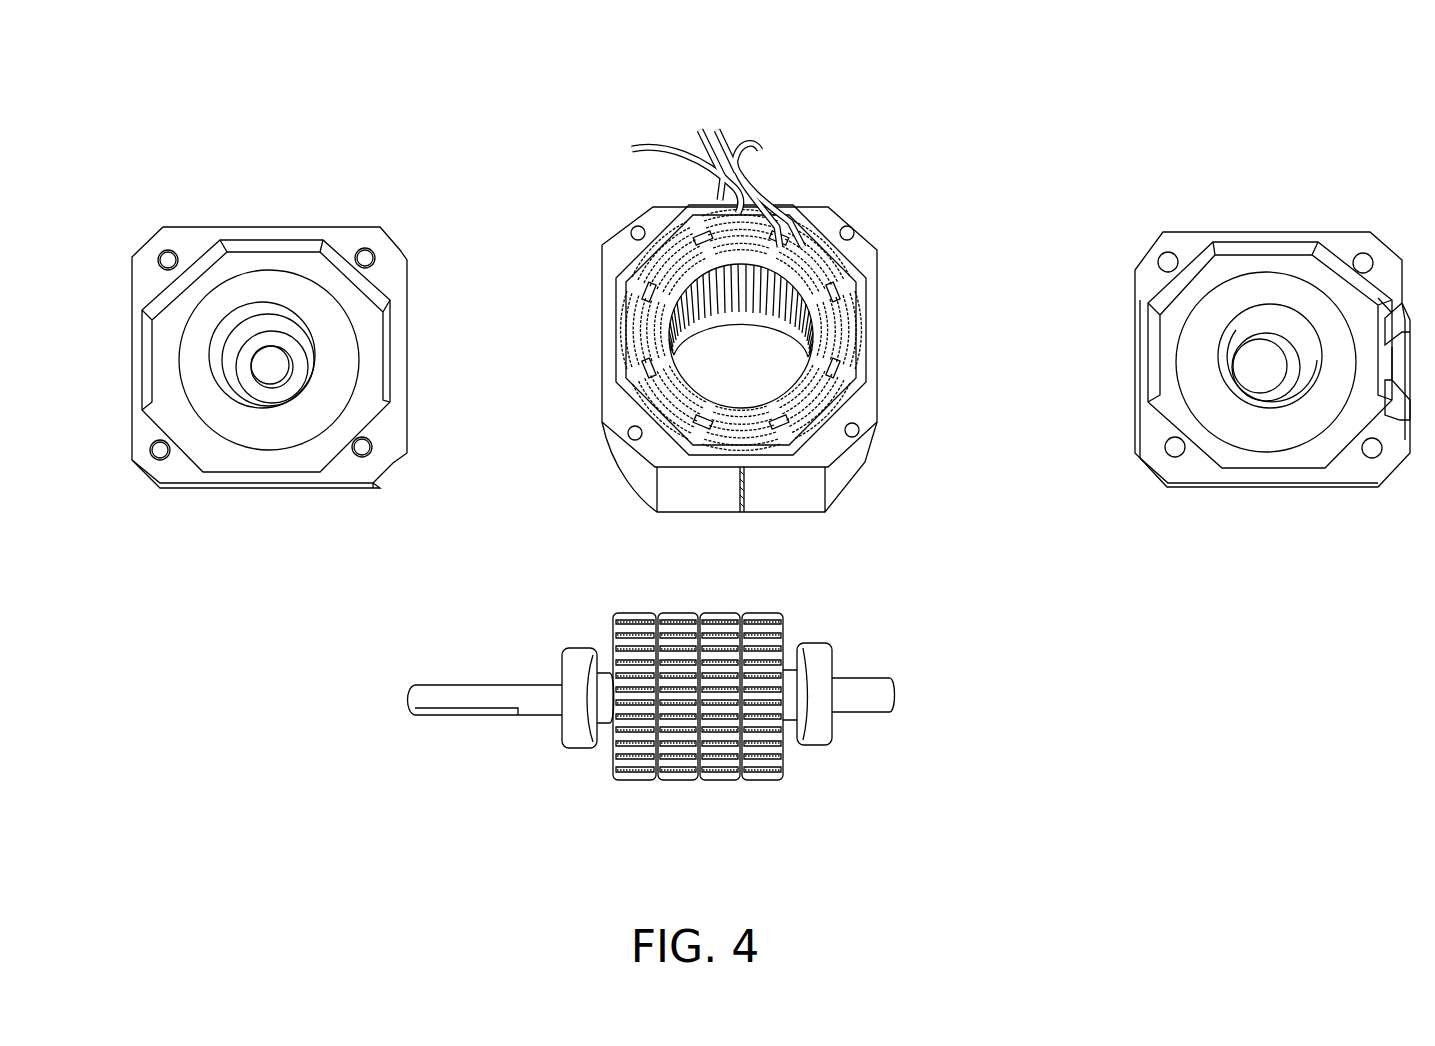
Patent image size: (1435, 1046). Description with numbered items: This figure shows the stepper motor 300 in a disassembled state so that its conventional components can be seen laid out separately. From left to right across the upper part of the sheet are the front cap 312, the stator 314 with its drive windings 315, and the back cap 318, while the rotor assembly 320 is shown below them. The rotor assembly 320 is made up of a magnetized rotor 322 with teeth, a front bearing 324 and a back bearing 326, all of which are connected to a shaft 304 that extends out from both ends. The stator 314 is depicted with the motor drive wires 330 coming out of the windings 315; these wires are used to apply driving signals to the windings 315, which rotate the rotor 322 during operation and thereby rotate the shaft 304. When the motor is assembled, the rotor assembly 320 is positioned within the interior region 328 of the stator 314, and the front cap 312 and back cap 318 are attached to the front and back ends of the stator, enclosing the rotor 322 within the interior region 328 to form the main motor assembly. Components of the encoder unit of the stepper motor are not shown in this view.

The stepper motor 300 is at (1064, 103).
The shaft 304 is at (890, 680).
The front cap 312 is at (312, 228).
The stator 314 is at (827, 210).
The drive windings 315 is at (845, 317).
The back cap 318 is at (1318, 231).
The rotor assembly 320 is at (850, 612).
The magnetized rotor 322 is at (713, 782).
The front bearing 324 is at (578, 747).
The back bearing 326 is at (813, 744).
The interior region 328 is at (708, 367).
The motor drive wires 330 is at (730, 138).